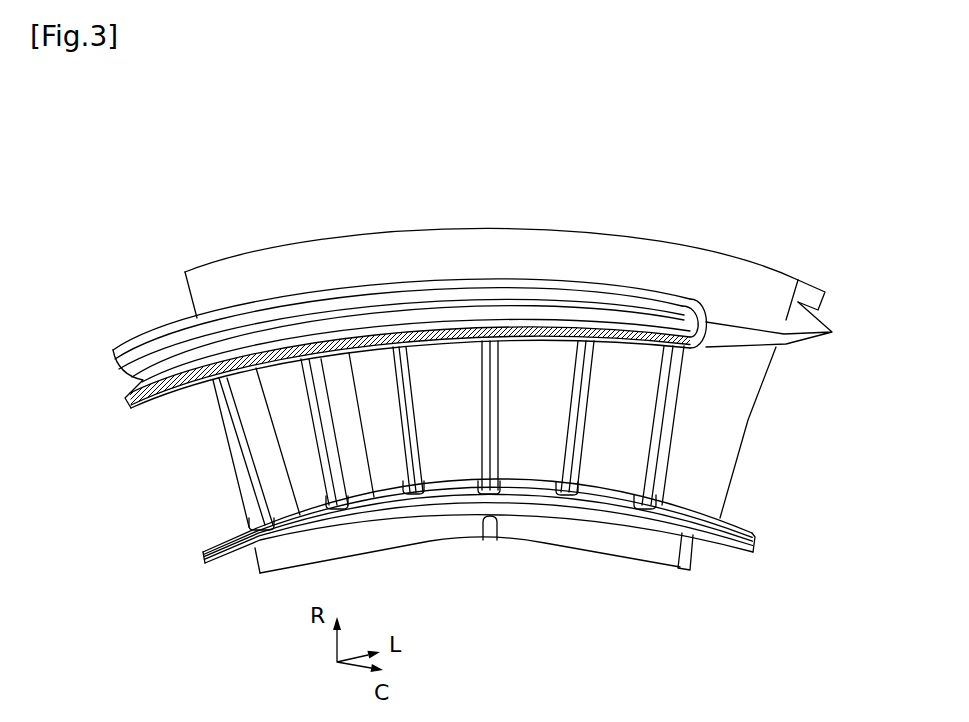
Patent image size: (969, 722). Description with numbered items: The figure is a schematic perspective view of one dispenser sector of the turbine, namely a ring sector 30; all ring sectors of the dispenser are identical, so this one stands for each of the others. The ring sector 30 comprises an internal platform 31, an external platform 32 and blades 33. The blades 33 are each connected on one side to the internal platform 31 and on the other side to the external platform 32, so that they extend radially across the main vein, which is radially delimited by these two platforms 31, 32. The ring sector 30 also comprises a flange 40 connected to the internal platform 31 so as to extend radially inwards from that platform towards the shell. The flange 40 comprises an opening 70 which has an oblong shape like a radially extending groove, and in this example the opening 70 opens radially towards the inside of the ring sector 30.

The ring sector 30 is at (596, 212).
The internal platform 31 is at (749, 526).
The external platform 32 is at (810, 346).
The blades 33 is at (338, 432).
The flange 40 is at (694, 556).
The opening 70 is at (491, 541).